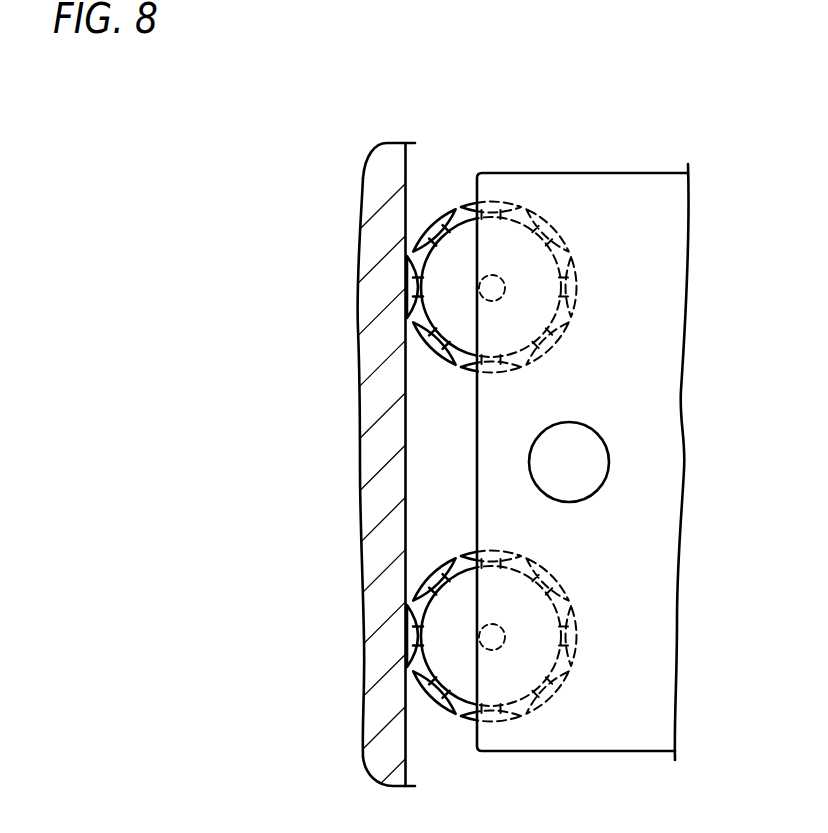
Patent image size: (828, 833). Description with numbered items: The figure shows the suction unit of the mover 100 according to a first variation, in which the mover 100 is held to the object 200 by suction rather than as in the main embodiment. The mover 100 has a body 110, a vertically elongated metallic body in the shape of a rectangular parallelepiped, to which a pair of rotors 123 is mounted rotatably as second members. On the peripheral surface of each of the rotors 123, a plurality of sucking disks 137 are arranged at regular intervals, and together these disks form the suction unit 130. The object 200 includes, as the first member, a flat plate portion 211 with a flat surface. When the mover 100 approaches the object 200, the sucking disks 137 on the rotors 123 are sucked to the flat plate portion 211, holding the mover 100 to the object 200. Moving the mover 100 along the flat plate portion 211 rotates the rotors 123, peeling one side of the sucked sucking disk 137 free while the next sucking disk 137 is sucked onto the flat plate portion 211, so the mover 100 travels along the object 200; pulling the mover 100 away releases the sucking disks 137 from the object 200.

The mover 100 is at (582, 432).
The body 110 is at (647, 198).
The rotors 123 is at (440, 287).
The suction unit 130 is at (492, 464).
The sucking disks 137 is at (447, 209).
The object 200 is at (345, 474).
The flat plate portion 211 is at (372, 557).